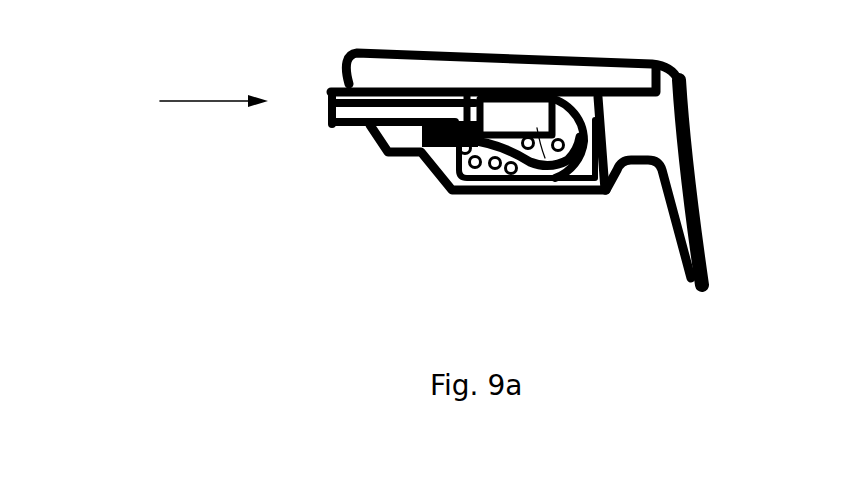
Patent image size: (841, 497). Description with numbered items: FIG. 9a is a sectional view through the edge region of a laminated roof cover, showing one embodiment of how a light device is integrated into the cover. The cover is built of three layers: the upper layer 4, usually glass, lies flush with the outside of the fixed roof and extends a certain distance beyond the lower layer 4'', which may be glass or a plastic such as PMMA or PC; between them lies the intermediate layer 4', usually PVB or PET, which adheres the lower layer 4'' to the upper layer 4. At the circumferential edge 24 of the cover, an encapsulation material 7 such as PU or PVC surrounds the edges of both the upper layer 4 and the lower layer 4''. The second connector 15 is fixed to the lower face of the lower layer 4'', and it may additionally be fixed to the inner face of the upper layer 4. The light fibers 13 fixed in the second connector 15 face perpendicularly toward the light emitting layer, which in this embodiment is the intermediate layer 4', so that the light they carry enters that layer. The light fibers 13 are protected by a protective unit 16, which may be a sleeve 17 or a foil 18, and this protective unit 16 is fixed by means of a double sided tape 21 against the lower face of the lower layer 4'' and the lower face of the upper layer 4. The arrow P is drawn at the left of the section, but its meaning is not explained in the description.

The direction of force / movement P is at (196, 108).
The upper layer 4 is at (440, 155).
The intermediate layer 4' is at (362, 175).
The lower layer 4'' is at (461, 178).
The encapsulation material 7 is at (672, 102).
The circumferential edge 24 is at (677, 127).
The double sided tape 21 is at (458, 148).
The light fibers 13 is at (575, 190).
The second connector 15 is at (540, 188).
The protective unit 16 is at (493, 182).
The sleeve 17 is at (543, 144).
The foil 18 is at (524, 151).